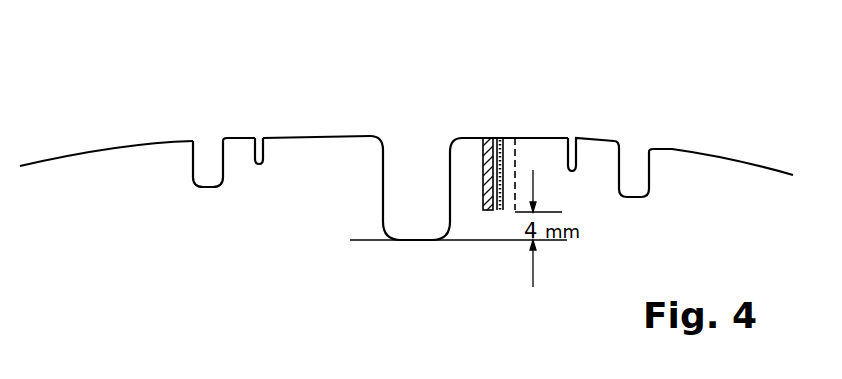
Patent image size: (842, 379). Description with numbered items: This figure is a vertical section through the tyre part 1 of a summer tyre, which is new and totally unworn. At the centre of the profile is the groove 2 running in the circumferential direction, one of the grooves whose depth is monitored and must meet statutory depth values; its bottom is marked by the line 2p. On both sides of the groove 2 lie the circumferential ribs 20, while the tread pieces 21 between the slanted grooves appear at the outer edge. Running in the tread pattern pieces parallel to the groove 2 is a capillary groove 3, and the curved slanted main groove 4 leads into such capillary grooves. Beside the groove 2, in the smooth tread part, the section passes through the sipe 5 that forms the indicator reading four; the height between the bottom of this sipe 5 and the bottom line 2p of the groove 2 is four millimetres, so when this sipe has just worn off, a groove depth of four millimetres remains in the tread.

The tyre part 1 is at (103, 172).
The groove 2 is at (432, 223).
The bottom line of the groove 2p is at (368, 240).
The capillary groove 3 is at (259, 143).
The main groove 4 is at (216, 171).
The indicator sipe 5 is at (503, 138).
The rib 20 is at (328, 134).
The tread piece 21 is at (674, 150).